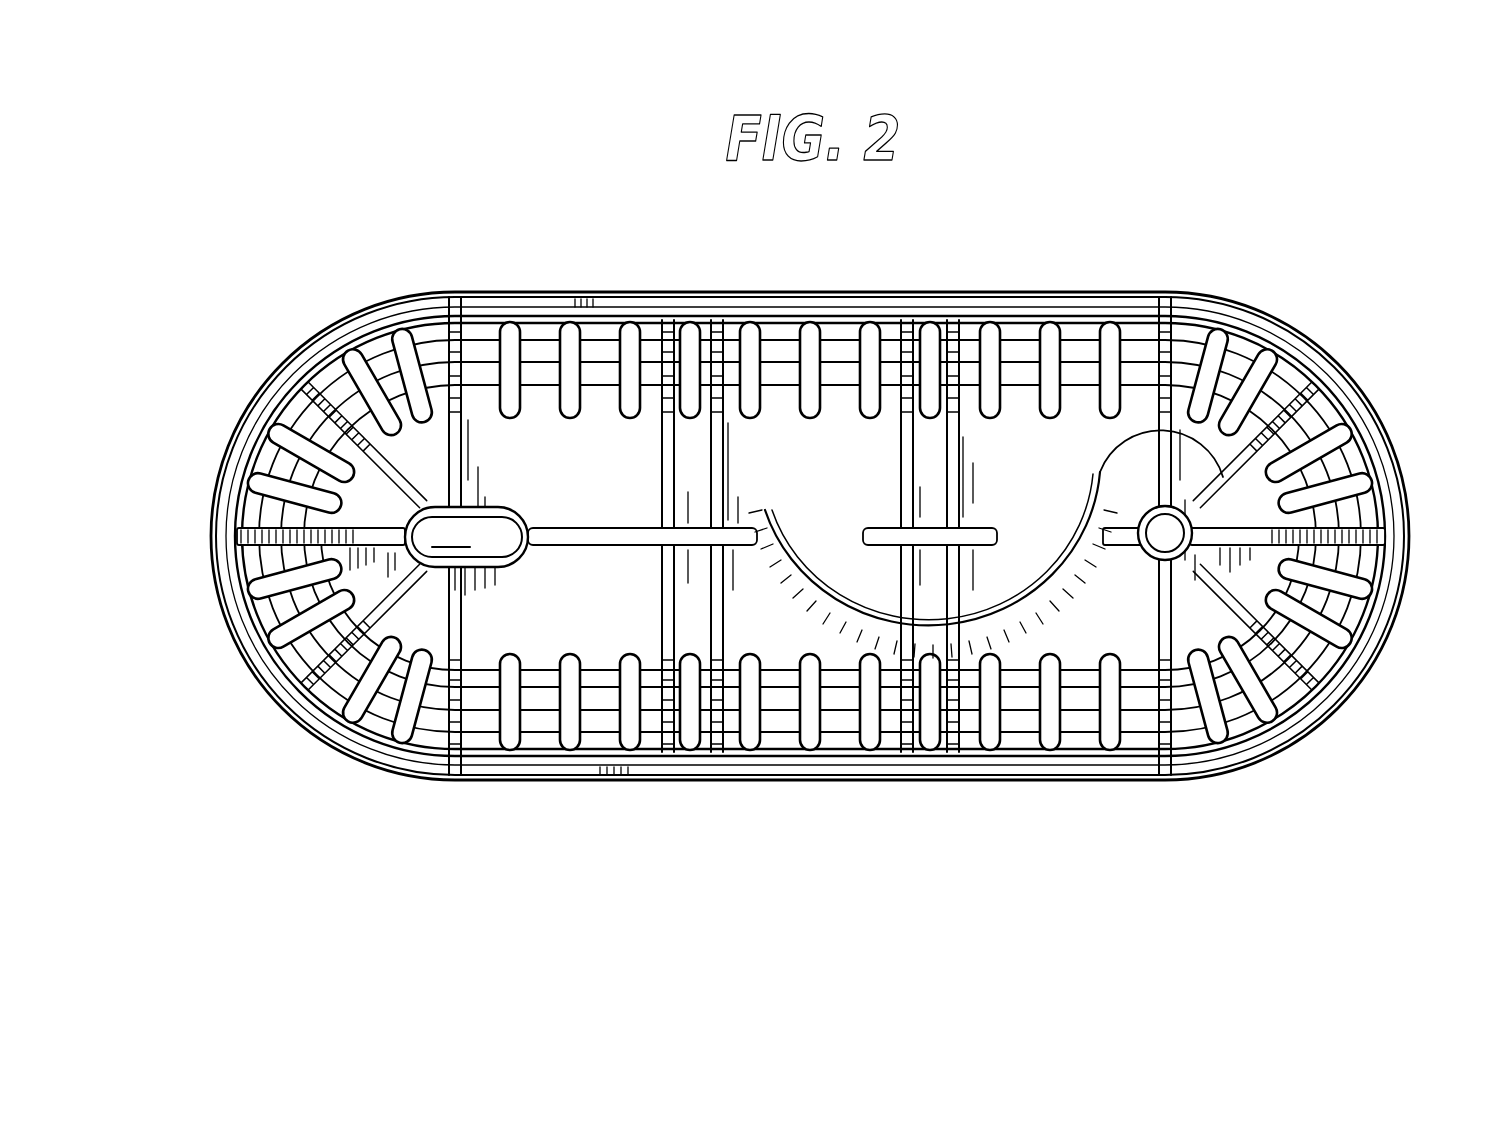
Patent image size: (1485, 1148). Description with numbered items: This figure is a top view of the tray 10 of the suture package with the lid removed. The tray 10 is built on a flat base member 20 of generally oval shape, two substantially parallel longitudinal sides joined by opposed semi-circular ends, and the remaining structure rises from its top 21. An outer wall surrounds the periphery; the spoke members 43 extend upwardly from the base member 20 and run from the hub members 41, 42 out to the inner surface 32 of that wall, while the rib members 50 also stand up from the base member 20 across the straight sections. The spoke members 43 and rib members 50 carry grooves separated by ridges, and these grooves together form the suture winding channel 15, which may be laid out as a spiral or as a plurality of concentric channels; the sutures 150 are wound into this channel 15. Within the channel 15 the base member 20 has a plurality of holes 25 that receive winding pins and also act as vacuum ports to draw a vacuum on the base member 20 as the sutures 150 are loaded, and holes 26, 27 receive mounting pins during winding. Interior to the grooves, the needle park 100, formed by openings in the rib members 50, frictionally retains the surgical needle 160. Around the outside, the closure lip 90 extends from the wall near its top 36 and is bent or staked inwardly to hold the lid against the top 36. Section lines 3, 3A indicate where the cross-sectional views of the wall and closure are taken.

The tray 10 is at (1333, 299).
The suture winding channel 15 is at (758, 329).
The flat base member 20 is at (555, 637).
The top 21 is at (547, 417).
The holes 25 is at (1097, 330).
The hole 26 is at (497, 547).
The hole 27 is at (1163, 530).
The inner surface 32 is at (785, 745).
The top 36 is at (603, 758).
The hub member 41 is at (510, 505).
The hub member 42 is at (1143, 553).
The spoke members 43 is at (373, 320).
The rib members 50 is at (663, 487).
The closure lip 90 is at (568, 772).
The needle park 100 is at (974, 616).
The sutures 150 is at (598, 333).
The surgical needle 160 is at (798, 567).
The section line 3- 3 is at (250, 547).
The section line 3A- 3A is at (782, 625).